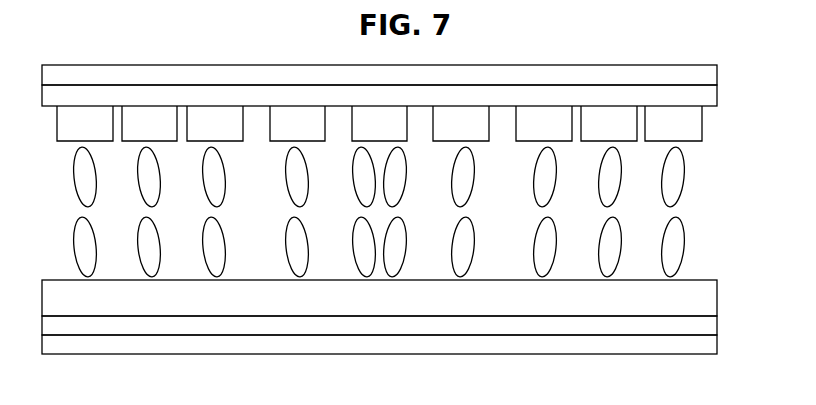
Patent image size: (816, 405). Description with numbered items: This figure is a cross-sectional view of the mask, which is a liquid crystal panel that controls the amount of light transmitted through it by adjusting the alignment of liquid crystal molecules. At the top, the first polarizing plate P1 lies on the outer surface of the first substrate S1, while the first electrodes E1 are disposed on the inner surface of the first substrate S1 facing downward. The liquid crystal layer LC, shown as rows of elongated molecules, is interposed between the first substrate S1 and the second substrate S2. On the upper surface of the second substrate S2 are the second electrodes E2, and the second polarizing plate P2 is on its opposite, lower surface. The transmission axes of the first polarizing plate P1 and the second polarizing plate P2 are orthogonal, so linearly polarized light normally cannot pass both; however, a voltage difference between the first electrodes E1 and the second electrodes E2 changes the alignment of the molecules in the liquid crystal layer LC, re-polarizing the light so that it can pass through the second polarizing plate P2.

The first polarizing plate P1 is at (712, 77).
The first substrate S1 is at (710, 98).
The first electrodes E1 is at (700, 127).
The liquid crystal layer LC is at (677, 181).
The second electrodes E2 is at (708, 297).
The second substrate S2 is at (708, 325).
The second polarizing plate P2 is at (708, 344).